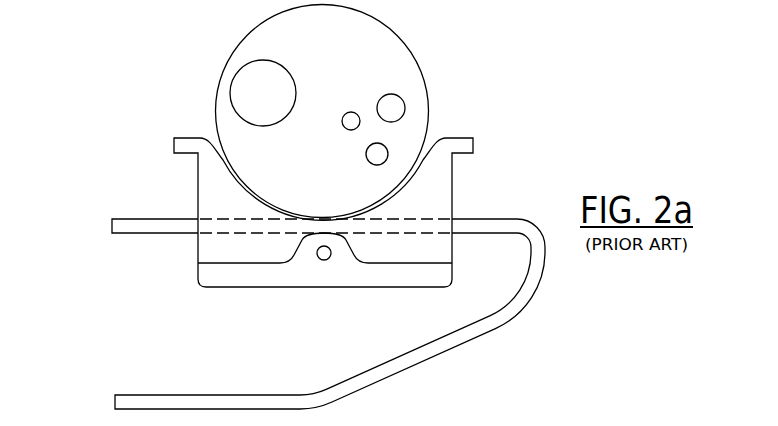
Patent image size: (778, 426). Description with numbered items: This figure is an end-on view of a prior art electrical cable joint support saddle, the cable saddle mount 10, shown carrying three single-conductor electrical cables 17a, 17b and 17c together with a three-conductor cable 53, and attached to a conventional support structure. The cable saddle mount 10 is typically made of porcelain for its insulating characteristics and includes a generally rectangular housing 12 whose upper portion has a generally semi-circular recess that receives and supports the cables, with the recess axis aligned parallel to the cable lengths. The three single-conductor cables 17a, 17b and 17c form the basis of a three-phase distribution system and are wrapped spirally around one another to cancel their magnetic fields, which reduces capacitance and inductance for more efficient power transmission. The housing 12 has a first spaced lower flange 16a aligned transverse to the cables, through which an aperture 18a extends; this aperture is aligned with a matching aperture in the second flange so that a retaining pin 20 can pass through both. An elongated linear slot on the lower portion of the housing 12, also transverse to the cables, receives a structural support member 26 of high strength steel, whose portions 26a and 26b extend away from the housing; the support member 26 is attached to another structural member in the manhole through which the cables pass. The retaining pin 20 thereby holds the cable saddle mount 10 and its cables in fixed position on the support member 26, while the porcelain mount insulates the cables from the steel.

The cable saddle mount 10 is at (178, 287).
The housing 12 is at (434, 206).
The 3/c cable 53 is at (271, 61).
The electrical cable 17a is at (345, 114).
The electrical cable 17b is at (371, 164).
The electrical cable 17c is at (389, 95).
The lower flange 16a is at (262, 280).
The aperture 18a is at (322, 260).
The retaining pin 20 is at (332, 257).
The structural support member 26 is at (495, 330).
The hose end 26a is at (110, 228).
The hose end 26b is at (112, 402).